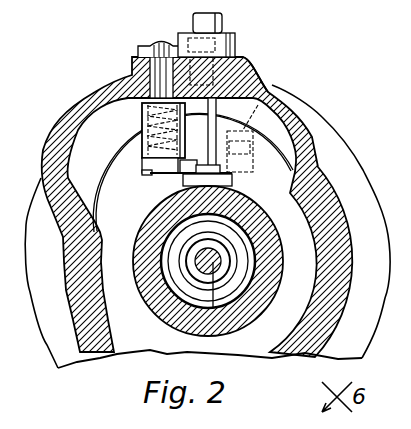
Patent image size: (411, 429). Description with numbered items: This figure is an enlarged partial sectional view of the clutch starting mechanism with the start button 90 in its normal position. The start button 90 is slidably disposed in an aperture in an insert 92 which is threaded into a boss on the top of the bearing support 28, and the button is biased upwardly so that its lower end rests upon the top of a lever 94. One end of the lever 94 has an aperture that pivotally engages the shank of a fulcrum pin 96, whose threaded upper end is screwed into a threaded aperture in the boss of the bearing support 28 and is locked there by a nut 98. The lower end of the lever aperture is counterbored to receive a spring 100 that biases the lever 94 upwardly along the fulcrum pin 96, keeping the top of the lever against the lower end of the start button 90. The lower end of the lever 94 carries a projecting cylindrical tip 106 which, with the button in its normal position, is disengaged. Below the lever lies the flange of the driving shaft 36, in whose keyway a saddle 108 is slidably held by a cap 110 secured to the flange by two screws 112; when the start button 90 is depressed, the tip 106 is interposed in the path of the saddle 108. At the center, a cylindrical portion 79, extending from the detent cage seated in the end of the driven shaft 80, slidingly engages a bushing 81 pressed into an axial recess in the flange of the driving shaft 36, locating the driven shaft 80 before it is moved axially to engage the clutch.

The driving shaft 36 is at (180, 322).
The bearing support 28 is at (278, 94).
The cap 110 is at (283, 133).
The screws 112 is at (270, 88).
The lever 94 is at (140, 107).
The spring 100 is at (141, 131).
The fulcrum pin 96 is at (143, 164).
The saddle 108 is at (178, 182).
The nut 98 is at (148, 46).
The insert 92 is at (238, 44).
The start button 90 is at (220, 20).
The cylindrical tip 106 is at (232, 177).
The driven shaft 80 is at (173, 242).
The bushing 81 is at (216, 332).
The cylindrical portion 79 is at (216, 262).